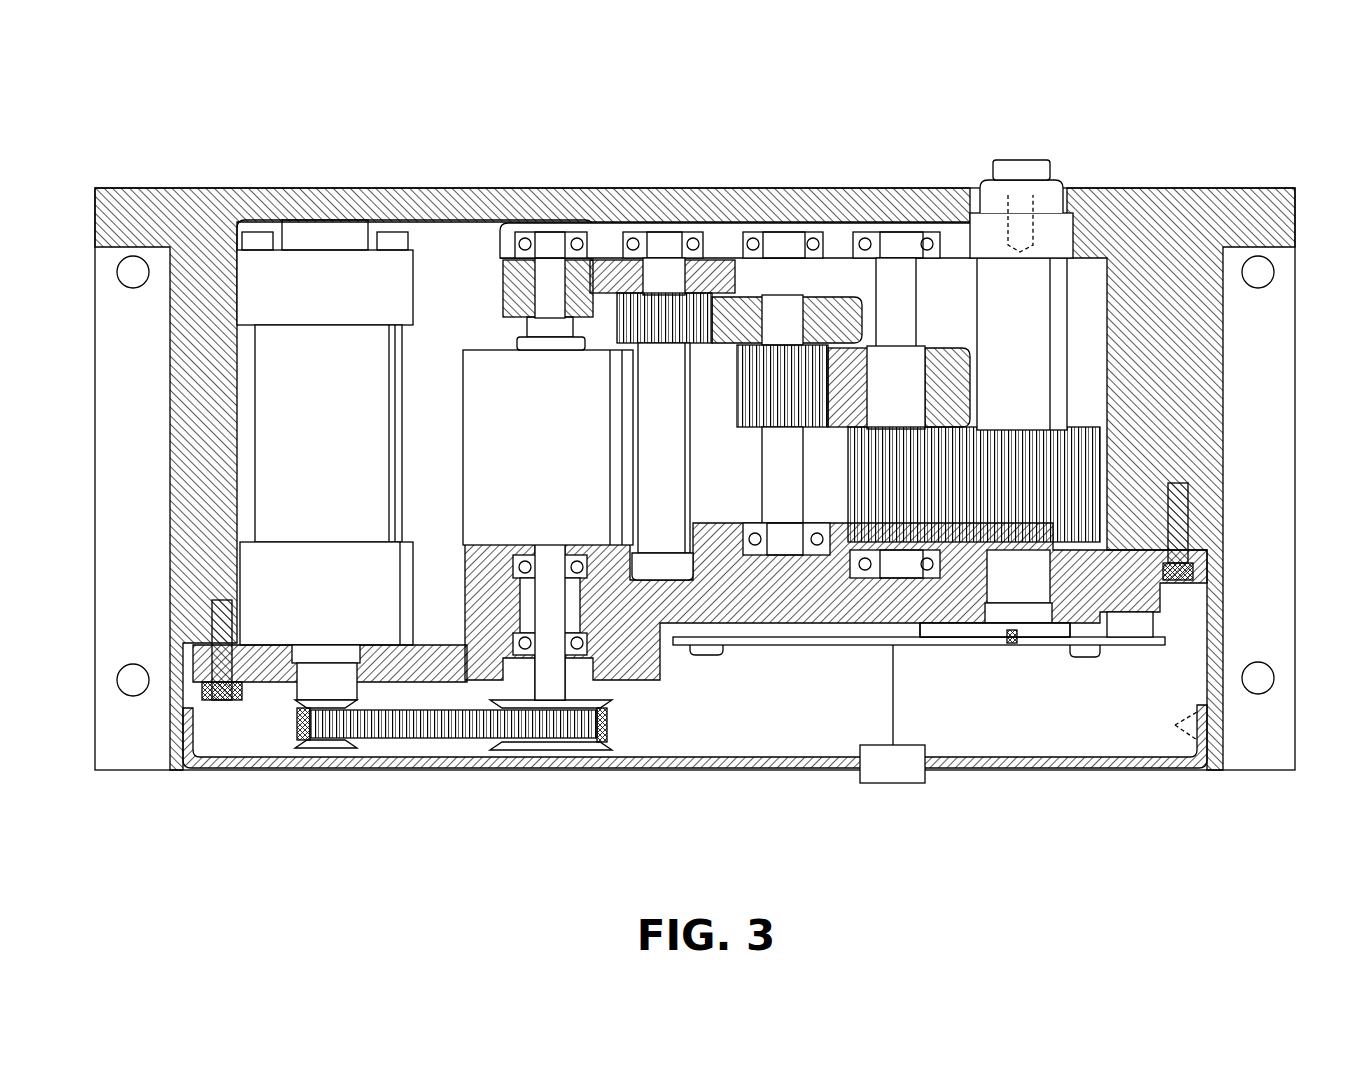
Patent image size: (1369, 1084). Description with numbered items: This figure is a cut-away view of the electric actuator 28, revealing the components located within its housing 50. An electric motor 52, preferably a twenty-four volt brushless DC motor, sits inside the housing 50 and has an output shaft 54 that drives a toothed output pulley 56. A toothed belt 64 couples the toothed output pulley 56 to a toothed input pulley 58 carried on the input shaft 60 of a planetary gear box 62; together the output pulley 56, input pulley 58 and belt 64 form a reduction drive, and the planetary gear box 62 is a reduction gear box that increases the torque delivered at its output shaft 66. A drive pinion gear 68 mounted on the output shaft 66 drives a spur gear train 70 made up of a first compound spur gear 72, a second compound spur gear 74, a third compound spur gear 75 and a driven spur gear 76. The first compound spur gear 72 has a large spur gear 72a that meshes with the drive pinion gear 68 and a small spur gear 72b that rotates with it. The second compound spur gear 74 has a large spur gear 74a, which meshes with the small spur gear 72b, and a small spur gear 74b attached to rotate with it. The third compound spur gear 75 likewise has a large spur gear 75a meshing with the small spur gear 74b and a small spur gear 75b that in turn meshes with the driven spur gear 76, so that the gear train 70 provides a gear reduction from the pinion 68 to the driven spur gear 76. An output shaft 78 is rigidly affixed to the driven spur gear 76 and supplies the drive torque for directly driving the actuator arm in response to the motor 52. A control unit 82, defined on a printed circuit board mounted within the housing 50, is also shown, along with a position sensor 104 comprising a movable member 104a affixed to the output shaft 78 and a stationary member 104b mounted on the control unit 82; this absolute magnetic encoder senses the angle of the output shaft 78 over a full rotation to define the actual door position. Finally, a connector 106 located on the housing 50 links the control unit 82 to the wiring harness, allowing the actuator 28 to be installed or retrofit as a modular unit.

The electric actuator 28 is at (705, 458).
The housing 50 is at (215, 188).
The electric motor 52 is at (237, 577).
The output shaft 54 is at (283, 648).
The toothed output pulley 56 is at (330, 750).
The toothed input pulley 58 is at (575, 745).
The input shaft 60 is at (527, 680).
The planetary gear box 62 is at (647, 548).
The toothed belt 64 is at (440, 740).
The output shaft 66 is at (545, 235).
The drive pinion gear 68 is at (505, 290).
The spur gear train 70 is at (941, 452).
The first compound spur gear 72 is at (650, 488).
The large spur gear 72a is at (617, 253).
The small spur gear 72b is at (697, 350).
The second compound spur gear 74 is at (779, 320).
The large spur gear 74a is at (748, 295).
The small spur gear 74b is at (773, 383).
The third compound spur gear 75 is at (996, 473).
The large spur gear 75a is at (950, 345).
The small spur gear 75b is at (1023, 625).
The driven spur gear 76 is at (1115, 468).
The output shaft 78 is at (1060, 287).
The control unit 82 is at (1125, 640).
The position sensor 104 is at (1016, 671).
The movable member 104a is at (1050, 620).
The stationary member 104b is at (1013, 645).
The connector 106 is at (893, 783).